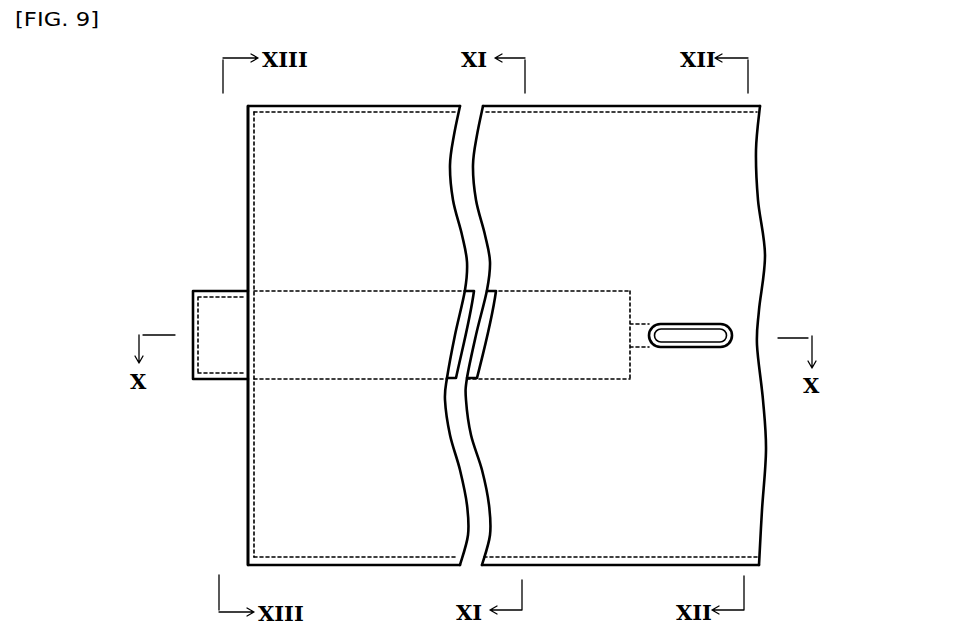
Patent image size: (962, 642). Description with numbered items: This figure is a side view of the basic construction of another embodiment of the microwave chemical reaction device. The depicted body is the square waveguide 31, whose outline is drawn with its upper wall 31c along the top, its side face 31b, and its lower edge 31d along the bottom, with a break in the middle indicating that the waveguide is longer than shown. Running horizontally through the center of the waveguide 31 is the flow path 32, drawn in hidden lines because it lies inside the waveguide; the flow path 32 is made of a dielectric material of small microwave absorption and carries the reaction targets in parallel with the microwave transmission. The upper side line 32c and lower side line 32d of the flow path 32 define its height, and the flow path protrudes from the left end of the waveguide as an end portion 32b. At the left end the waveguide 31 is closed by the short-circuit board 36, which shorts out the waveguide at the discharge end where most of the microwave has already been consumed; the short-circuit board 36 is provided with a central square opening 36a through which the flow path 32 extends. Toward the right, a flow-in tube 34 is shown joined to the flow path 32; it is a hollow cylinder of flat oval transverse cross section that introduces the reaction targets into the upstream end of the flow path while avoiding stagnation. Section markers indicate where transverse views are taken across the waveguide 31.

The square waveguide 31 is at (628, 105).
The panel face portion 31b is at (310, 222).
The upper wall of the waveguide 31c is at (397, 105).
The lower edge portion 31d is at (322, 563).
The flow path 32 is at (557, 288).
The tab end portion 32b is at (218, 347).
The channel upper side line 32c is at (398, 290).
The channel lower side line 32d is at (385, 380).
The flow-in tube 34 is at (727, 325).
The short-circuit board 36 is at (247, 147).
The central square opening 36a is at (247, 290).